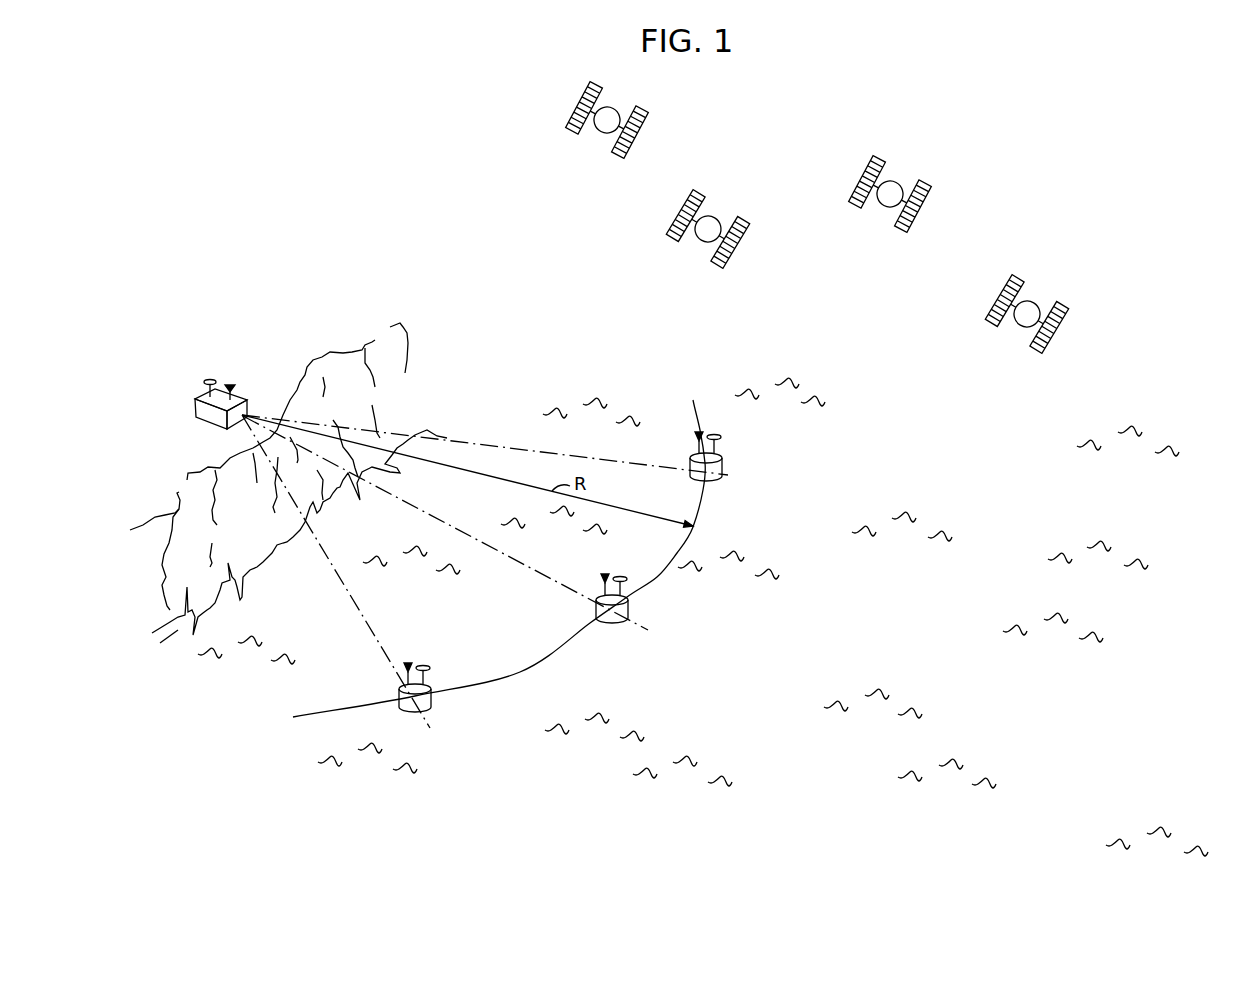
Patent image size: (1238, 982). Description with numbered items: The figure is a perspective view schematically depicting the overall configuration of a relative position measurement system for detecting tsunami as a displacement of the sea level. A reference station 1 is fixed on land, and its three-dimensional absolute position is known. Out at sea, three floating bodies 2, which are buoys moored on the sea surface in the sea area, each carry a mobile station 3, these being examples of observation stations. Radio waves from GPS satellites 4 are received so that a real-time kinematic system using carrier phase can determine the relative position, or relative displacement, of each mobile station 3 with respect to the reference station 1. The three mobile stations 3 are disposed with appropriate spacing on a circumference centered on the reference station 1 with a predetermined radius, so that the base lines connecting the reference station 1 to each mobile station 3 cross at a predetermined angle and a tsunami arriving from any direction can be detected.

The reference station 1 is at (253, 383).
The floating body 2 is at (713, 477).
The mobile station 3 is at (597, 580).
The GPS satellite 4 is at (603, 130).